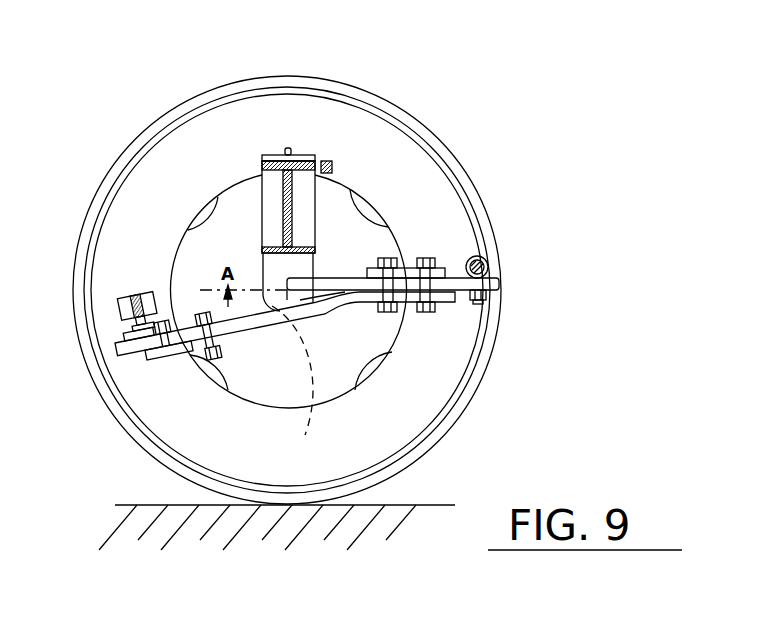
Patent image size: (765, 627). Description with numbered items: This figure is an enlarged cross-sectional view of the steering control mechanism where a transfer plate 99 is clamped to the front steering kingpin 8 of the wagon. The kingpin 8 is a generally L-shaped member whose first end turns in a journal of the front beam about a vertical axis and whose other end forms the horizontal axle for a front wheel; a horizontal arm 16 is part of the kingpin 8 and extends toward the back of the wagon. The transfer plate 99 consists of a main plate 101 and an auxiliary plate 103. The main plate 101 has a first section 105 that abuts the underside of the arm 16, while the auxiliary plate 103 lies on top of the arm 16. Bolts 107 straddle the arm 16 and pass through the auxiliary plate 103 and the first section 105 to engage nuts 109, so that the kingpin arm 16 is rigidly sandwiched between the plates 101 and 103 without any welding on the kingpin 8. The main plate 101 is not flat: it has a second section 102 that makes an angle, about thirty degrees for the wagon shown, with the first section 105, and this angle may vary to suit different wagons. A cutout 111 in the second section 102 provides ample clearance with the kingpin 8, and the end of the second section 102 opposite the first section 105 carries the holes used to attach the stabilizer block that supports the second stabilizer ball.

The kingpin 8 is at (303, 266).
The horizontal arm 16 is at (457, 278).
The transfer plate 99 is at (253, 333).
The main plate 101 is at (340, 306).
The second section 102 is at (224, 356).
The auxiliary plate 103 is at (402, 264).
The first section 105 is at (447, 298).
The bolts 107 is at (424, 257).
The nuts 109 is at (410, 303).
The cutout 111 is at (295, 384).